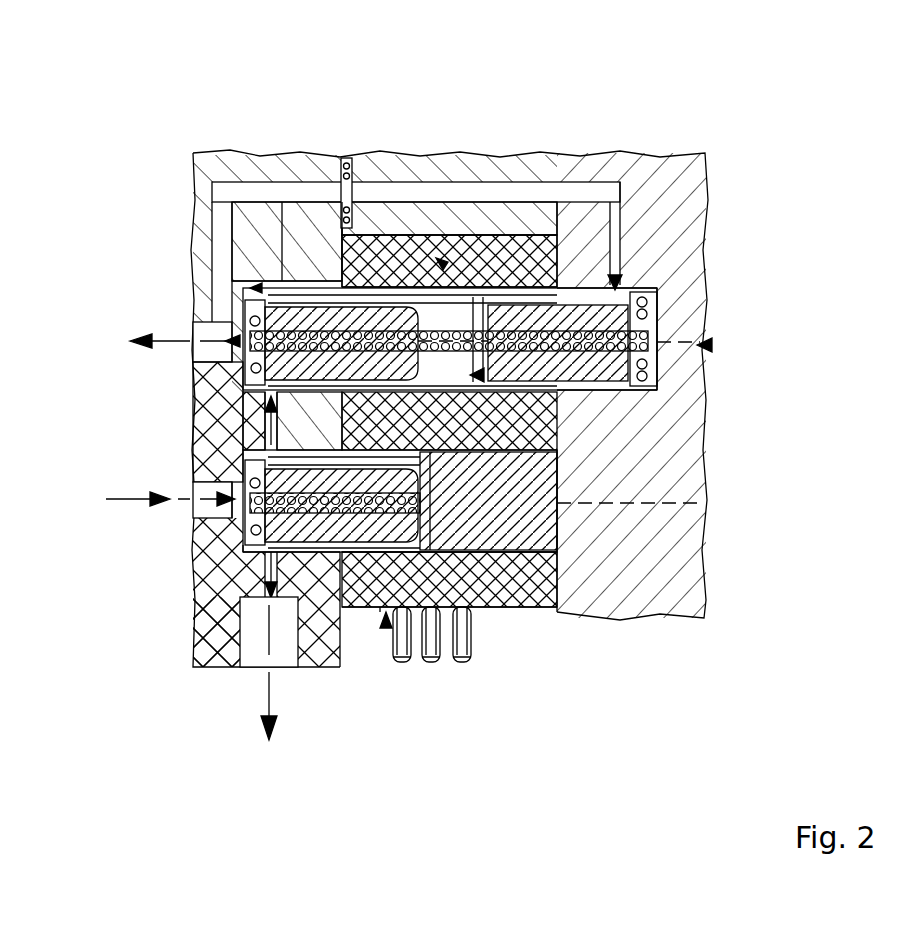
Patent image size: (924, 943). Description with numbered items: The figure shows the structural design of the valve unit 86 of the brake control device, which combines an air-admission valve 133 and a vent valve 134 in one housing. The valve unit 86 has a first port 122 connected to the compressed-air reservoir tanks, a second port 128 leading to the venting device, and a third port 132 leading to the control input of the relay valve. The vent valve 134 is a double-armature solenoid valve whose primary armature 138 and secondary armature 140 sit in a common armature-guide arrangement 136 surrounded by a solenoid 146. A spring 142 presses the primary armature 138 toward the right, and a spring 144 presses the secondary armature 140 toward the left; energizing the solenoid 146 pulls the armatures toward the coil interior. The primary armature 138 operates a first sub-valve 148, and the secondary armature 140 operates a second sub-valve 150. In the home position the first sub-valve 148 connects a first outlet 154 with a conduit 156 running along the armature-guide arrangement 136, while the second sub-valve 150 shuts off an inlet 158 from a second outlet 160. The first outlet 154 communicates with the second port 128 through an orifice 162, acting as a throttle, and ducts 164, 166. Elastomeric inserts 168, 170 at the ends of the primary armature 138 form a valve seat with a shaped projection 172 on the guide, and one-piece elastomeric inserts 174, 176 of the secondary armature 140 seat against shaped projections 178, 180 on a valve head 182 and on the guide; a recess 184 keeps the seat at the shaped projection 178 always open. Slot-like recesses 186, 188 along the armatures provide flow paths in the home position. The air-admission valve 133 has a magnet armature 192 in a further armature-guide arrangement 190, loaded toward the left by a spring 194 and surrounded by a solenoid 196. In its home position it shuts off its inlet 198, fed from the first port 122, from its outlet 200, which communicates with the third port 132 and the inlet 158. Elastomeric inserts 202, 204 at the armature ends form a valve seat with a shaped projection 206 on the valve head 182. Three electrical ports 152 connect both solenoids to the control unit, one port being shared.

The valve unit 86 is at (690, 104).
The first port 122 is at (193, 513).
The second port 128 is at (193, 347).
The third port 132 is at (257, 667).
The air-admission valve 133 is at (436, 665).
The vent valve 134 is at (522, 245).
The armature-guide arrangement 136 is at (424, 262).
The primary armature 138 is at (584, 270).
The secondary armature 140 is at (350, 245).
The spring 142 is at (610, 405).
The spring 144 is at (292, 255).
The solenoid 146 is at (385, 275).
The first sub-valve 148 is at (575, 428).
The second sub-valve 150 is at (262, 262).
The electrical ports 152 is at (467, 665).
The first outlet 154 is at (650, 300).
The conduit 156 is at (466, 275).
The inlet 158 is at (268, 398).
The second outlet 160 is at (235, 312).
The orifice 162 is at (638, 208).
The duct 164 is at (600, 250).
The duct 166 is at (208, 215).
The elastomeric insert 168 is at (492, 240).
The elastomeric insert 170 is at (705, 343).
The shaped projection 172 is at (478, 292).
The elastomeric insert 174 is at (408, 218).
The elastomeric insert 176 is at (252, 288).
The shaped projection 178 is at (245, 352).
The shaped projection 180 is at (503, 610).
The valve head 182 is at (184, 292).
The recess 184 is at (443, 270).
The slot-like recess 186 is at (565, 418).
The slot-like recess 188 is at (327, 240).
The armature-guide arrangement 190 is at (386, 626).
The magnet armature 192 is at (390, 620).
The spring 194 is at (238, 605).
The solenoid 196 is at (538, 610).
The inlet 198 is at (232, 485).
The outlet 200 is at (262, 408).
The elastomeric insert 202 is at (262, 565).
The elastomeric insert 204 is at (478, 612).
The shaped projection 206 is at (240, 537).